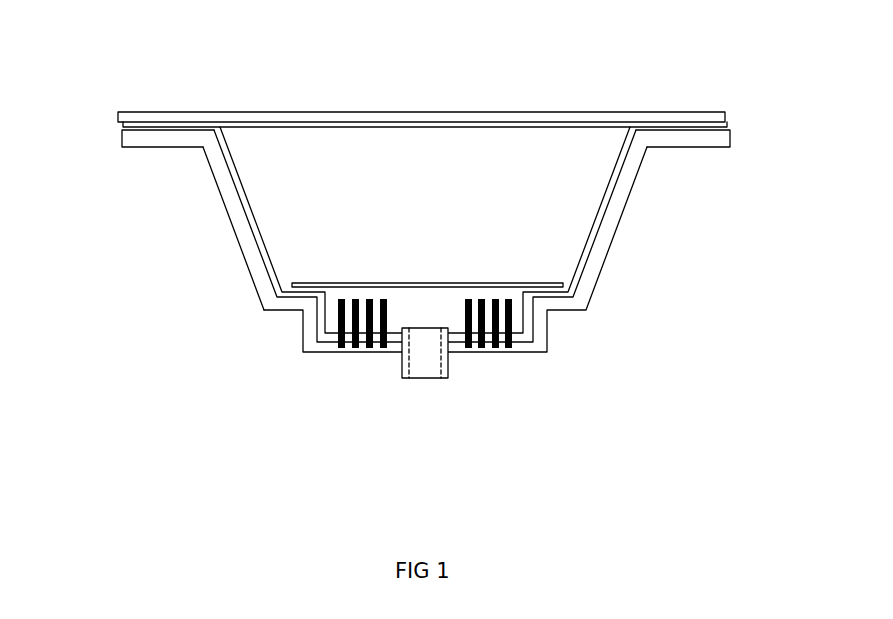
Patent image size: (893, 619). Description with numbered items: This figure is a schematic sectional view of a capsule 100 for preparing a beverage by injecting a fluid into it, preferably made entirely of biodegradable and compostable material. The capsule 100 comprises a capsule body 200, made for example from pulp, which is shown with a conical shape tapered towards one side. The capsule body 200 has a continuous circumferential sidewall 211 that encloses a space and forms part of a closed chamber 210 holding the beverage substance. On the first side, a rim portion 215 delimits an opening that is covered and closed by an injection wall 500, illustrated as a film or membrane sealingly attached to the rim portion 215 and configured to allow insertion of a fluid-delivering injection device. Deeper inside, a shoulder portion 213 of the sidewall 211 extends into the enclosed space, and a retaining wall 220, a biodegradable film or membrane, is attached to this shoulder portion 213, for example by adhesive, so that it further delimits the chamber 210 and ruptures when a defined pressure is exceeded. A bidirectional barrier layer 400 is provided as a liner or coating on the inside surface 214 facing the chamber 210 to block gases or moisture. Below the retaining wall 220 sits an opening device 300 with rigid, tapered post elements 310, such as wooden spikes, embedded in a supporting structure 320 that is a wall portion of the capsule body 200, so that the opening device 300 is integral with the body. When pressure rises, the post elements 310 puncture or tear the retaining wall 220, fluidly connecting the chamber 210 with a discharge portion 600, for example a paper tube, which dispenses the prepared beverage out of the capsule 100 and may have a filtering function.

The capsule 100 is at (128, 65).
The capsule body 200 is at (240, 225).
The closed chamber 210 is at (425, 198).
The sidewall 211 is at (248, 238).
The shoulder portion 213 is at (565, 302).
The inside surface 214 is at (250, 198).
The rim portion 215 is at (683, 140).
The retaining wall 220 is at (427, 283).
The opening device 300 is at (332, 368).
The post elements 310 is at (383, 348).
The supporting structure 320 is at (458, 353).
The barrier layer 400 is at (610, 185).
The injection wall 500 is at (293, 118).
The discharge portion 600 is at (433, 368).